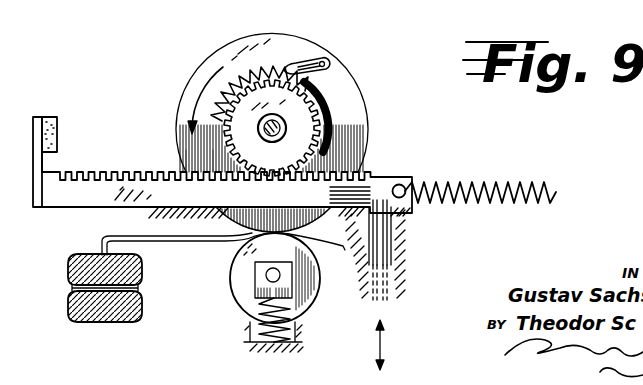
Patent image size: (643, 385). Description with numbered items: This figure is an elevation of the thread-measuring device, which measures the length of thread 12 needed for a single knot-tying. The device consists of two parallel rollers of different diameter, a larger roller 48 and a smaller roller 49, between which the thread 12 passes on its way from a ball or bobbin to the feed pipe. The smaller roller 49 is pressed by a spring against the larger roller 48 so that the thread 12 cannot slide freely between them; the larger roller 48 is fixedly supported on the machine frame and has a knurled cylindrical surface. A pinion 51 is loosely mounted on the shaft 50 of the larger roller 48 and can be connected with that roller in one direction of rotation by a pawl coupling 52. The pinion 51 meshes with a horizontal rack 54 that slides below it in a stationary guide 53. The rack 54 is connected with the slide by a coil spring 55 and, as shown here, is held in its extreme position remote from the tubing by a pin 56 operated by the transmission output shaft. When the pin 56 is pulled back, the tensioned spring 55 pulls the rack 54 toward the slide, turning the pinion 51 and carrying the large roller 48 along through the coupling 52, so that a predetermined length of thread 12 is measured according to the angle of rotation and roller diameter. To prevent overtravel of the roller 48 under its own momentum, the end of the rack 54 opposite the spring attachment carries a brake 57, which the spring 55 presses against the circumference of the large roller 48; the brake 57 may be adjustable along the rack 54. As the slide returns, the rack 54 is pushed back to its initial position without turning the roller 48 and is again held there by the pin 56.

The thread 12 is at (344, 248).
The larger roller 48 is at (364, 116).
The smaller roller 49 is at (246, 302).
The shaft 50 is at (269, 121).
The pinion 51 is at (238, 134).
The coupling 52 is at (288, 58).
The stationary guide 53 is at (197, 220).
The rack 54 is at (87, 195).
The coil spring 55 is at (488, 190).
The pin 56 is at (384, 246).
The brake 57 is at (57, 132).